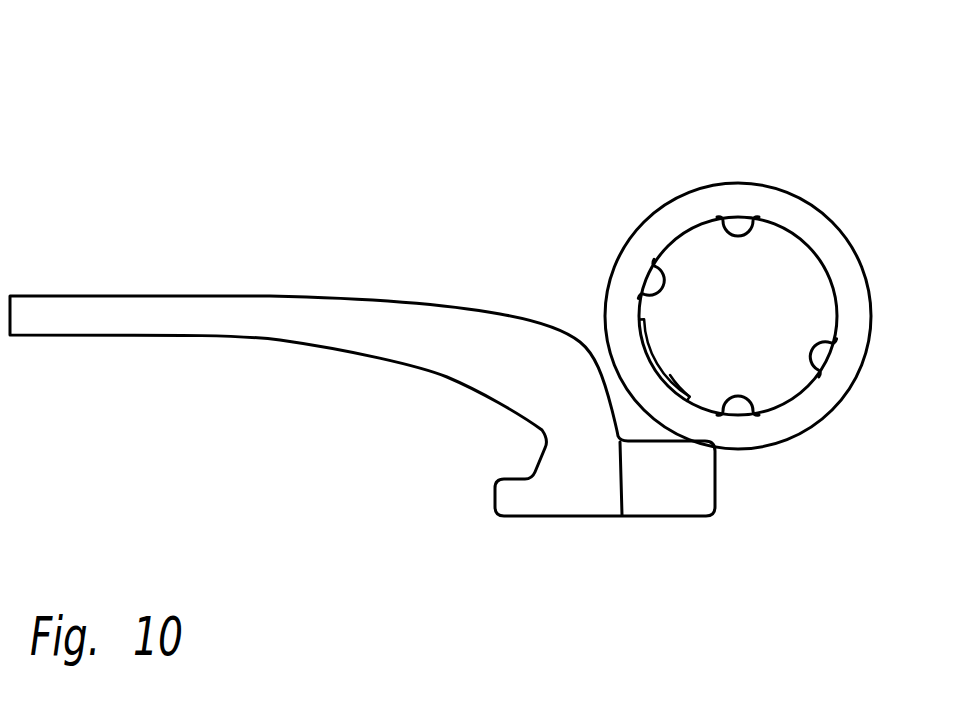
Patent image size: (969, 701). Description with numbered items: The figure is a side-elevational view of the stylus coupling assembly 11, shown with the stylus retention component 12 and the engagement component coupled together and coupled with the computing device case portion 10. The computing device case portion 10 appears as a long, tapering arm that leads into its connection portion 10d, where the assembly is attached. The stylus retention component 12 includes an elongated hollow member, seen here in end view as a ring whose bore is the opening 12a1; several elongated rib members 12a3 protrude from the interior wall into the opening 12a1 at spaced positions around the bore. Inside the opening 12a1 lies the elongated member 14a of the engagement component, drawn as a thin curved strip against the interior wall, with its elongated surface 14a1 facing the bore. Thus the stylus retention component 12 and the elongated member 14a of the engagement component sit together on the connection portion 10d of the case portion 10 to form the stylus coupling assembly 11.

The computing device case portion 10 is at (180, 220).
The connection portion 10d is at (718, 550).
The stylus coupling assembly 11 is at (635, 210).
The stylus retention component 12 is at (790, 128).
The opening 12a1 is at (798, 295).
The elongated rib member 12a3 is at (738, 226).
The elongated member 14a is at (655, 340).
The elongated surface 14a1 is at (686, 361).